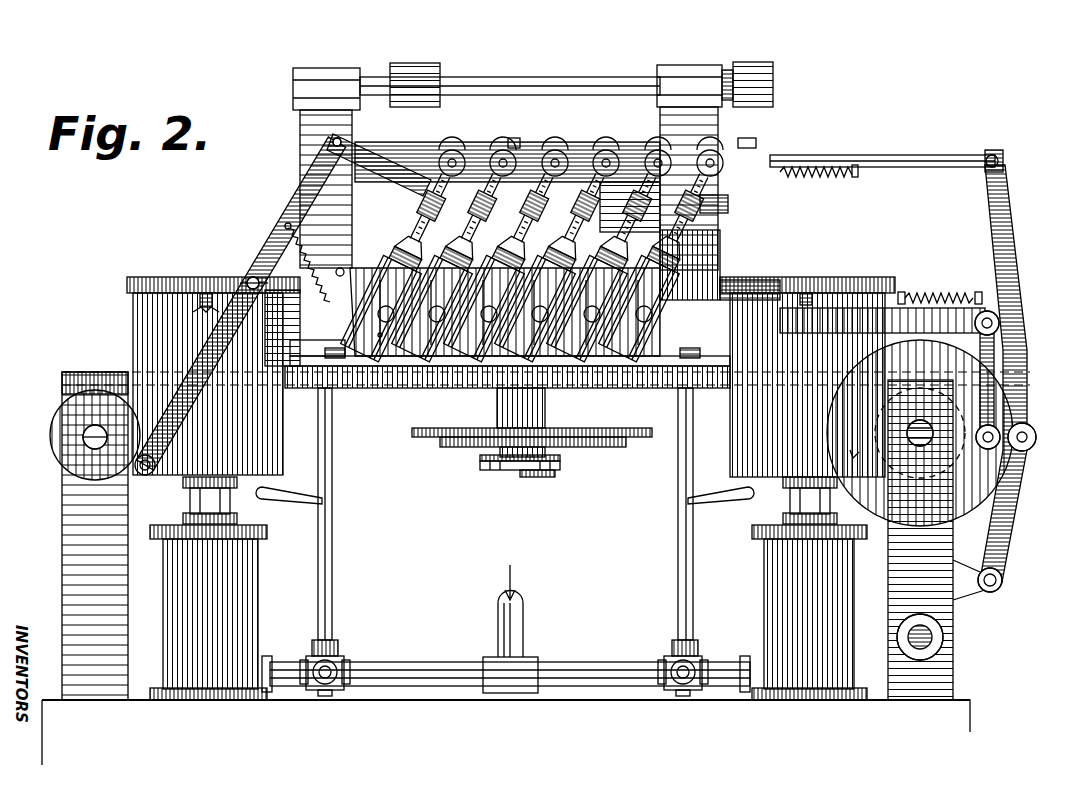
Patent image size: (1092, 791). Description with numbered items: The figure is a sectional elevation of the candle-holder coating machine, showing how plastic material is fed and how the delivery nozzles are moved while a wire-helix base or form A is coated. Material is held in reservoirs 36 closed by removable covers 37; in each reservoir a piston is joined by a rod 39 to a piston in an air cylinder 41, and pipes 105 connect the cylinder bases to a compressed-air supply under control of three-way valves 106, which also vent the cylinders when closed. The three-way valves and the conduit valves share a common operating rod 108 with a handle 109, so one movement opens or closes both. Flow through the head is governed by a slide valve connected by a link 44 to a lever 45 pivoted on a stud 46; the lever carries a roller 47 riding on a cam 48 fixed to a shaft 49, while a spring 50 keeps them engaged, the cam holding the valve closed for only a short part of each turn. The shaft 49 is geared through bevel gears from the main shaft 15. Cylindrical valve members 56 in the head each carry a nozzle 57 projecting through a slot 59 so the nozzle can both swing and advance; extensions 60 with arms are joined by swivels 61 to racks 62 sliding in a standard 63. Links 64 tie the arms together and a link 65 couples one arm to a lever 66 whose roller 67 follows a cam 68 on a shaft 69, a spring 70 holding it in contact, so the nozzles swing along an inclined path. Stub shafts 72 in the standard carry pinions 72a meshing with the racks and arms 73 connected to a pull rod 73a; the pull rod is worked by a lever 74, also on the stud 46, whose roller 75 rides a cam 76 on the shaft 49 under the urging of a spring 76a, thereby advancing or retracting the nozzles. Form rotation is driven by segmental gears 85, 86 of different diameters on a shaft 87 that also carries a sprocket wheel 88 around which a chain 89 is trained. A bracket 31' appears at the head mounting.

The main shaft 15 is at (944, 640).
The bracket 31' is at (319, 353).
The reservoir 36 is at (138, 334).
The removable cover 37 is at (163, 285).
The rod 39 is at (228, 497).
The air cylinder 41 is at (248, 584).
The link 44 is at (922, 318).
The lever 45 is at (998, 332).
The stud 46 is at (1000, 588).
The roller 47 is at (1000, 432).
The cam 48 is at (980, 412).
The shaft 49 is at (925, 432).
The spring 50 is at (960, 292).
The cylindrical valve member 56 is at (410, 265).
The nozzle 57 is at (425, 345).
The slot 59 is at (378, 300).
The extension 60 is at (720, 260).
The swivel 61 is at (728, 203).
The rack 62 is at (452, 205).
The standard 63 is at (420, 120).
The link 64 is at (658, 232).
The link 65 is at (382, 176).
The lever 66 is at (305, 203).
The roller 67 is at (150, 474).
The cam 68 is at (60, 440).
The shaft 69 is at (90, 433).
The spring 70 is at (316, 246).
The stub shaft 72 is at (714, 160).
The pinion 72a is at (518, 142).
The arm 73 is at (472, 140).
The pull rod 73a is at (892, 157).
The lever 74 is at (1020, 210).
The roller 75 is at (1036, 437).
The cam 76 is at (905, 528).
The spring 76a is at (818, 178).
The segmental gear 85 is at (640, 434).
The segmental gear 86 is at (612, 446).
The shaft 87 is at (536, 478).
The sprocket wheel 88 is at (510, 466).
The chain 89 is at (578, 470).
The pipe 105 is at (398, 668).
The three-way valve 106 is at (328, 680).
The operating rod 108 is at (333, 512).
The handle 109 is at (290, 500).
The base or form A is at (380, 340).